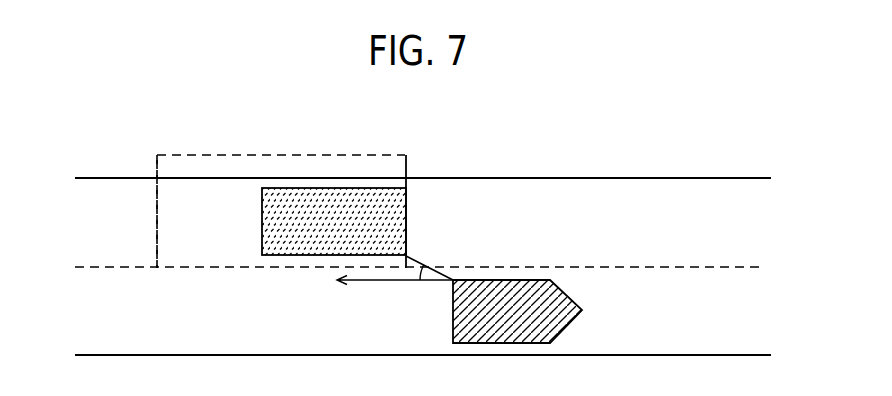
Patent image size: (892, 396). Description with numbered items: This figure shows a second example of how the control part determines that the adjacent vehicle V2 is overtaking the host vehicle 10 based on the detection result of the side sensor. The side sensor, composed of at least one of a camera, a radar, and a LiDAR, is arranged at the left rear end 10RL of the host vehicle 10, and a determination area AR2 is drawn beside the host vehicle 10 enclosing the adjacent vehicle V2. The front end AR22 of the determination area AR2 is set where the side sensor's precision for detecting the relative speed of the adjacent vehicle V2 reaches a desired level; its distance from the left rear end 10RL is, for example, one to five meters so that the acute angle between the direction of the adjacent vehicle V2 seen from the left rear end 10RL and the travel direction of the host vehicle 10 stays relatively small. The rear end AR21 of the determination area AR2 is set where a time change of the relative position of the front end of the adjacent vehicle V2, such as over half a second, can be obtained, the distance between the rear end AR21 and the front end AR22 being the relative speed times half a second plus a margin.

The determination area AR2 is at (268, 154).
The rear end of the determination area AR21 is at (156, 175).
The front end of the determination area AR22 is at (406, 168).
The adjacent vehicle V2 is at (262, 216).
The left rear end of the host vehicle 10RL is at (449, 278).
The host vehicle 10 is at (583, 310).